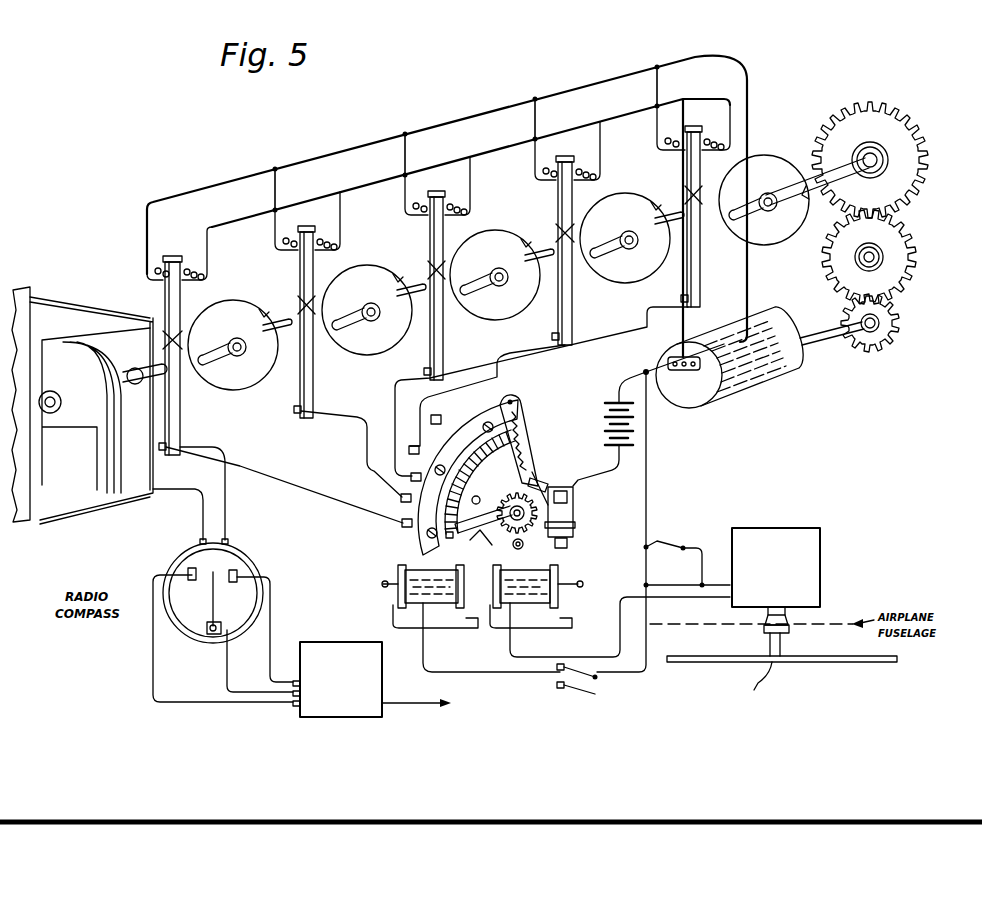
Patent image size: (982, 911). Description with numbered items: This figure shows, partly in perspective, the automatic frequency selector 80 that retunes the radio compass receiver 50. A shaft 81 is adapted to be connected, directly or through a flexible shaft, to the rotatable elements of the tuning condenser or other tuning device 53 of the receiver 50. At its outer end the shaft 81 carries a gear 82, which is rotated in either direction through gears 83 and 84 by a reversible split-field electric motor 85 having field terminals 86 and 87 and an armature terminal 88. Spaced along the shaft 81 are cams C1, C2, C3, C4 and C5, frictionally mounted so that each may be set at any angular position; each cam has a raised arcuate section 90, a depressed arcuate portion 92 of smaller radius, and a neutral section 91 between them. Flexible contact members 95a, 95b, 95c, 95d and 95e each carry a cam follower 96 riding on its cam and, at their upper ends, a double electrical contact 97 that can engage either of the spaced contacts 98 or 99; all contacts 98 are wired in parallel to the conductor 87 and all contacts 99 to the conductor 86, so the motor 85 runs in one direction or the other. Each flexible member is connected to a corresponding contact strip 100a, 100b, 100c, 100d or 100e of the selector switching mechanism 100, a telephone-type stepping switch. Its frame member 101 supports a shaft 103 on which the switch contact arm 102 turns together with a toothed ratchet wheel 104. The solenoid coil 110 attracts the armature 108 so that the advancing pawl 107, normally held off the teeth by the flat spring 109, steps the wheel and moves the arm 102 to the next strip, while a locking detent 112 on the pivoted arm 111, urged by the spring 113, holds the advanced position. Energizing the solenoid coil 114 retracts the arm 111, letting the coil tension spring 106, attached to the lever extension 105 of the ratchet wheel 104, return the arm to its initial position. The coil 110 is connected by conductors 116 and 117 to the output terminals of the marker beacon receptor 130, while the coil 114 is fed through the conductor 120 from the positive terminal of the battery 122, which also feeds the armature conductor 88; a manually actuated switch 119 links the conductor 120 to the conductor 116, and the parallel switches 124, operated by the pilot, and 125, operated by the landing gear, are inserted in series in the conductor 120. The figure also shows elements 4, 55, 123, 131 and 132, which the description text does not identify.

The gyro pilot 4 is at (323, 640).
The radio compass receiver 50 is at (60, 290).
The tuning condenser 53 is at (52, 415).
The compass indicator instrument 55 is at (250, 568).
The automatic frequency selector 80 is at (684, 434).
The shaft 81 is at (215, 366).
The gear 82 is at (928, 172).
The gear 83 is at (913, 241).
The gear 84 is at (893, 309).
The reversible electric motor 85 is at (821, 287).
The field terminal 86 is at (572, 86).
The field terminal 87 is at (488, 148).
The armature terminal 88 is at (668, 364).
The raised arcuate section 90 is at (340, 347).
The neutral section 91 is at (186, 272).
The depressed arcuate portion 92 is at (372, 340).
The flexible contact member 95a is at (183, 432).
The flexible contact member 95b is at (305, 420).
The flexible contact member 95c is at (443, 354).
The flexible contact member 95d is at (573, 316).
The flexible contact member 95e is at (701, 284).
The cam follower 96 is at (298, 306).
The double electrical contact 97 is at (320, 221).
The electric contact 98 is at (455, 204).
The electric contact 99 is at (160, 268).
The selector switching mechanism 100 is at (535, 447).
The contact strip 100a is at (403, 527).
The contact strip 100b is at (401, 498).
The contact strip 100c is at (411, 477).
The contact strip 100d is at (412, 450).
The contact strip 100e is at (437, 415).
The frame member 101 is at (516, 410).
The switch contact arm 102 is at (483, 514).
The shaft 103 is at (512, 530).
The toothed ratchet wheel 104 is at (518, 549).
The integral lever extension 105 is at (533, 479).
The coil tension spring 106 is at (537, 470).
The advancing pawl 107 is at (573, 543).
The armature 108 is at (575, 526).
The flat spring 109 is at (573, 506).
The solenoid coil 110 is at (566, 571).
The pivotally mounted arm 111 is at (478, 538).
The locking detent 112 is at (485, 489).
The spring 113 is at (448, 539).
The solenoid coil 114 is at (402, 566).
The conductor 116 is at (614, 590).
The conductor 117 is at (660, 598).
The manually actuated switch 119 is at (660, 540).
The conductor 120 is at (646, 496).
The battery 122 is at (610, 400).
The conductor 123 is at (590, 484).
The switch 124 is at (583, 670).
The switch 125 is at (578, 695).
The marker beacon receptor 130 is at (777, 528).
The insulator 131 is at (788, 618).
The antenna 132 is at (768, 668).
The cam C1 is at (250, 378).
The cam C2 is at (374, 335).
The cam C3 is at (510, 294).
The cam C4 is at (632, 278).
The cam C5 is at (786, 228).